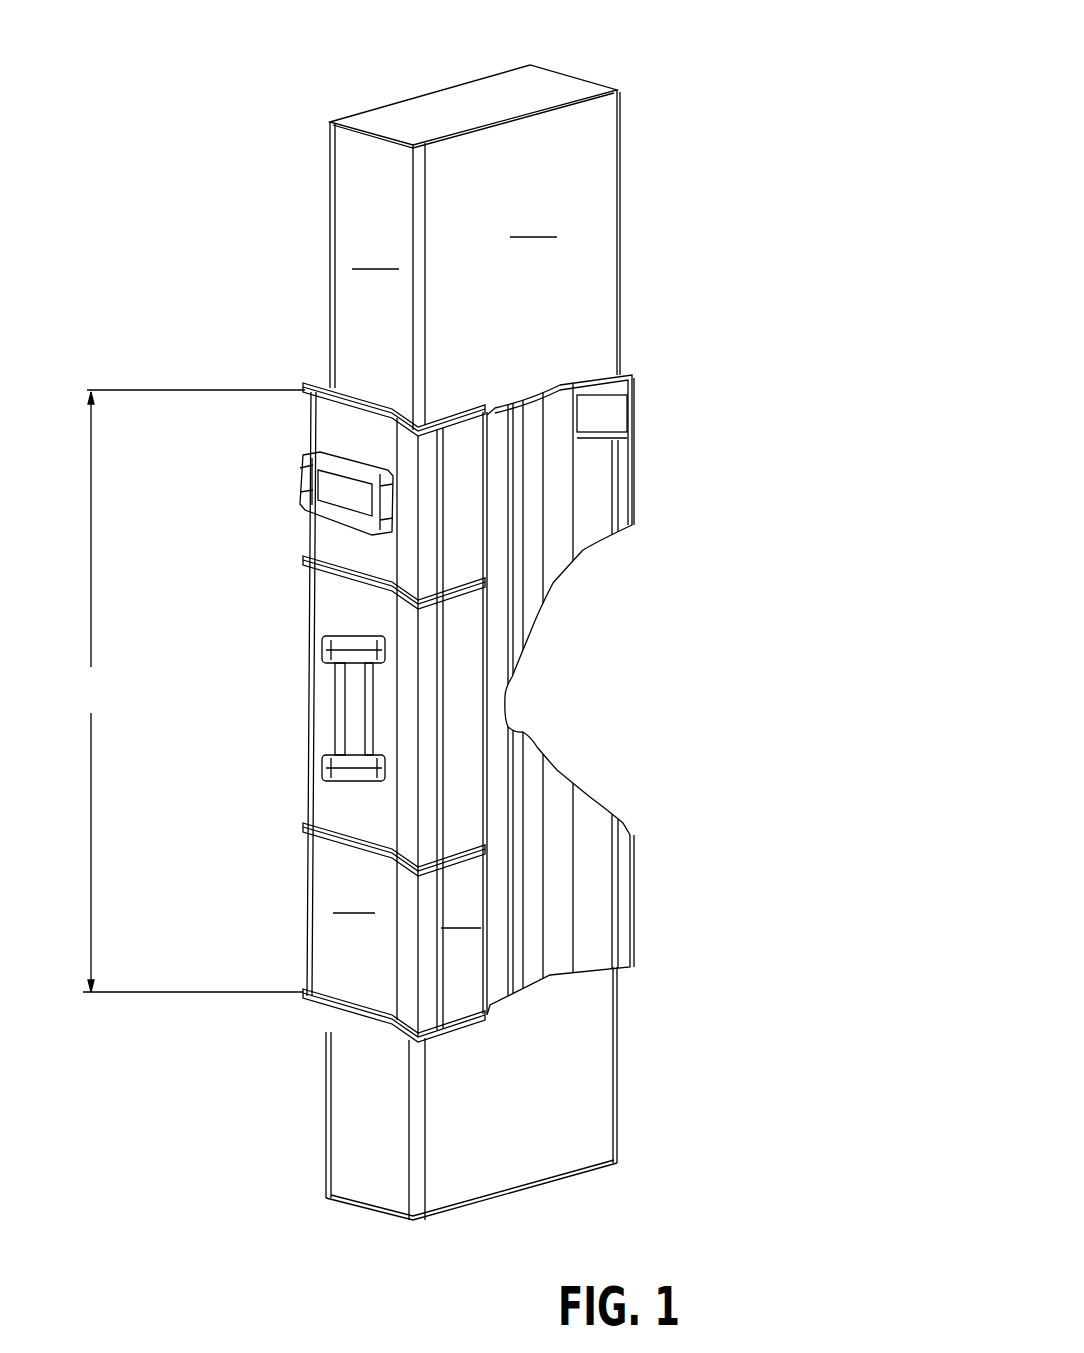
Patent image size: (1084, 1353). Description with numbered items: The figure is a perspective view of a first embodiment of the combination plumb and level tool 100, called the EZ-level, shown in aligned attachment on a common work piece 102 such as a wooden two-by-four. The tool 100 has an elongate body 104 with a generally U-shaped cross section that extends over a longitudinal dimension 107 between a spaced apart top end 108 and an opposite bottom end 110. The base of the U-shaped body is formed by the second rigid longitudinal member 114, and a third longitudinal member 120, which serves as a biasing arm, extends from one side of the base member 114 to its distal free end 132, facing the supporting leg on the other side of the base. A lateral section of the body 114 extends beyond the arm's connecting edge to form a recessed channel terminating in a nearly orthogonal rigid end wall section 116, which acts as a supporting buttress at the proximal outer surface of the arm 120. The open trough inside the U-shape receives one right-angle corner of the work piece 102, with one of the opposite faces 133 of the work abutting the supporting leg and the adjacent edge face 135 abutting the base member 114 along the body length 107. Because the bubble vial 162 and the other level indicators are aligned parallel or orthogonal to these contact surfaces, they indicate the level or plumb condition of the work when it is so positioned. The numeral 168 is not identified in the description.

The combination plumb and level tool 100 is at (763, 165).
The work piece 102 is at (540, 65).
The elongate body 104 is at (325, 938).
The longitudinal dimension 107 is at (184, 691).
The top end 108 is at (308, 387).
The bottom end 110 is at (333, 1012).
The second rigid longitudinal member 114 is at (347, 904).
The end wall section 116 is at (460, 915).
The third longitudinal member 120 is at (602, 416).
The distal free end 132 is at (632, 453).
The face of the work 133 is at (563, 225).
The edge face of the work 135 is at (367, 250).
The bubble vial 162 is at (313, 520).
The handle 168 is at (337, 698).